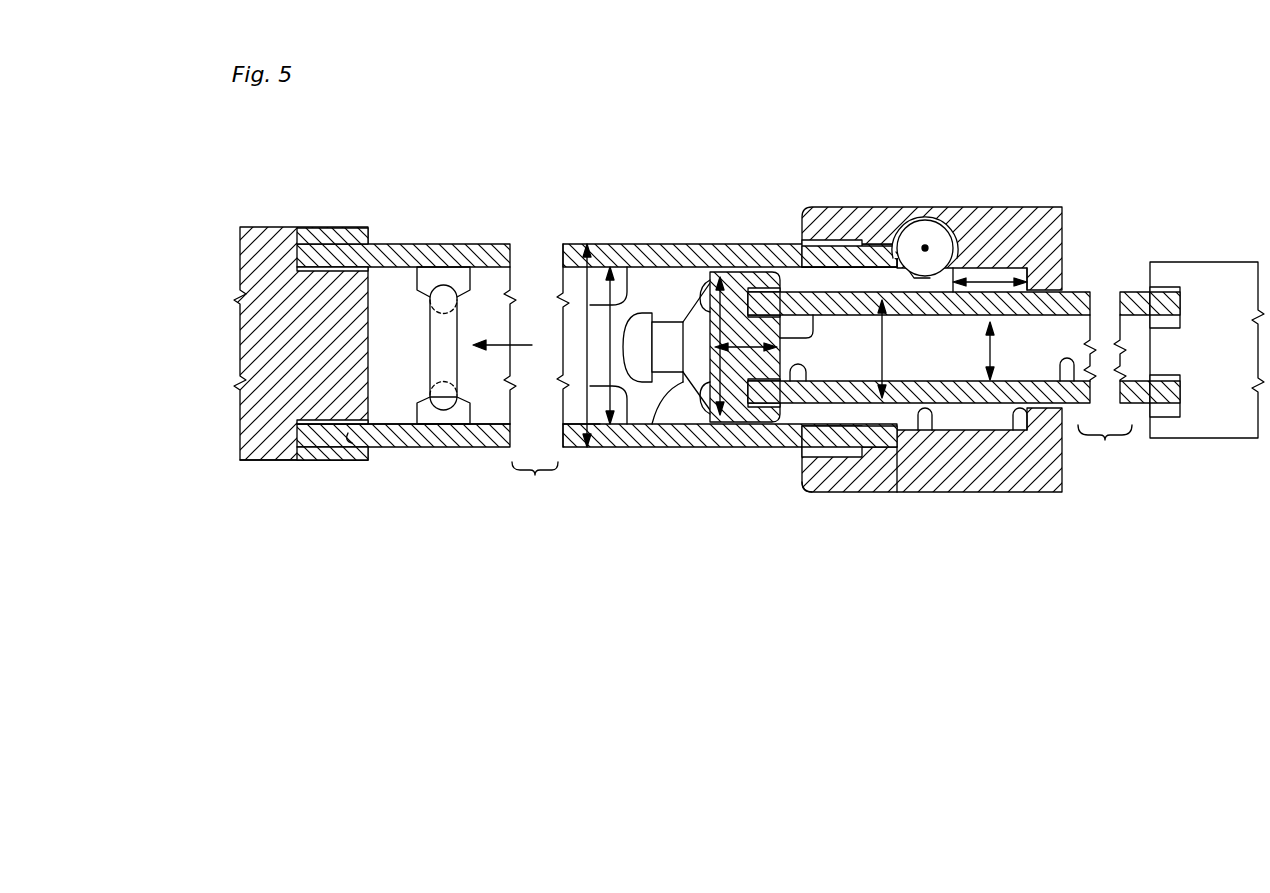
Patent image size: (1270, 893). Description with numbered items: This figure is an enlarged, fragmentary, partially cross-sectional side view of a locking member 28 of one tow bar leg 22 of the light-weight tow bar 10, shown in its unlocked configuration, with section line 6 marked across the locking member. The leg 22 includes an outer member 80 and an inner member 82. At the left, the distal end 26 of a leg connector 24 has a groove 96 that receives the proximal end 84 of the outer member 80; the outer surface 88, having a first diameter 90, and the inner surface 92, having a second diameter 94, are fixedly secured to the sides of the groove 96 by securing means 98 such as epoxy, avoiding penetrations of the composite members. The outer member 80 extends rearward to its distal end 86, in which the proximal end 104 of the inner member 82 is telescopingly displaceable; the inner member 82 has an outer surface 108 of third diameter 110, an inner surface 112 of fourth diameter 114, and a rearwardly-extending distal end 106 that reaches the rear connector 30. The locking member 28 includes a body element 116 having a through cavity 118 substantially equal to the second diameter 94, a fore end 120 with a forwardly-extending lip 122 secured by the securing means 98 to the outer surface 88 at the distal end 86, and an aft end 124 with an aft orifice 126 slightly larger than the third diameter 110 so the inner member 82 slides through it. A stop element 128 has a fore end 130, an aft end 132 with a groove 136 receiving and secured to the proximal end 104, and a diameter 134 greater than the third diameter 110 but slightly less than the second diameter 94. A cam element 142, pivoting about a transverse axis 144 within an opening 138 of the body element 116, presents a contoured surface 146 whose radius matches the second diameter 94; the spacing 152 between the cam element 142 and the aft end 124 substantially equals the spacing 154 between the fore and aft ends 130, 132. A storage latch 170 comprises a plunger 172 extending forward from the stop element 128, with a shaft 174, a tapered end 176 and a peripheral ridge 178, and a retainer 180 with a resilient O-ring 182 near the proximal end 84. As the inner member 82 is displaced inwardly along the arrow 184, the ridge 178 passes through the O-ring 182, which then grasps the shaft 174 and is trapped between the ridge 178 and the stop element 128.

The tow bar 10 is at (437, 155).
The tow bar leg 22 is at (572, 527).
The leg connector 24 is at (272, 420).
The distal end of leg connector 26 is at (280, 225).
The locking member 28 is at (822, 527).
The rear connector 30 is at (1228, 280).
The outer member 80 is at (405, 243).
The inner member 82 is at (955, 403).
The proximal end of outer member 84 is at (425, 447).
The distal end of outer member 86 is at (800, 440).
The outer surface of outer member 88 is at (568, 244).
The first diameter 90 is at (572, 447).
The inner surface of outer member 92 is at (492, 270).
The second diameter 94 is at (624, 267).
The groove 96 is at (350, 438).
The securing means 98 is at (315, 265).
The proximal end of inner member 104 is at (800, 382).
The distal end of inner member 106 is at (1140, 403).
The outer surface of inner member 108 is at (1077, 403).
The third diameter 110 is at (882, 403).
The inner surface of inner member 112 is at (1070, 378).
The fourth diameter 114 is at (990, 381).
The body element 116 is at (1020, 217).
The through cavity 118 is at (932, 432).
The fore end of body element 120 is at (817, 490).
The lip 122 is at (803, 233).
The aft end of body element 124 is at (1012, 430).
The aft orifice 126 is at (1062, 240).
The stop element 128 is at (716, 360).
The fore end of stop element 130 is at (652, 447).
The aft end of stop element 132 is at (818, 245).
The diameter of stop element 134 is at (703, 244).
The groove of stop element 136 is at (737, 345).
The opening 138 is at (953, 223).
The cam element 142 is at (913, 235).
The axis 144 is at (925, 246).
The contoured surface 146 is at (893, 257).
The spacing 152 is at (992, 278).
The spacing 154 is at (745, 343).
The storage latch 170 is at (673, 170).
The plunger 172 is at (647, 537).
The shaft 174 is at (667, 323).
The tapered end 176 is at (638, 313).
The ridge 178 is at (636, 388).
The retainer 180 is at (430, 277).
The O-ring 182 is at (452, 360).
The arrow 184 is at (517, 343).
The section line 6- 6 is at (901, 117).